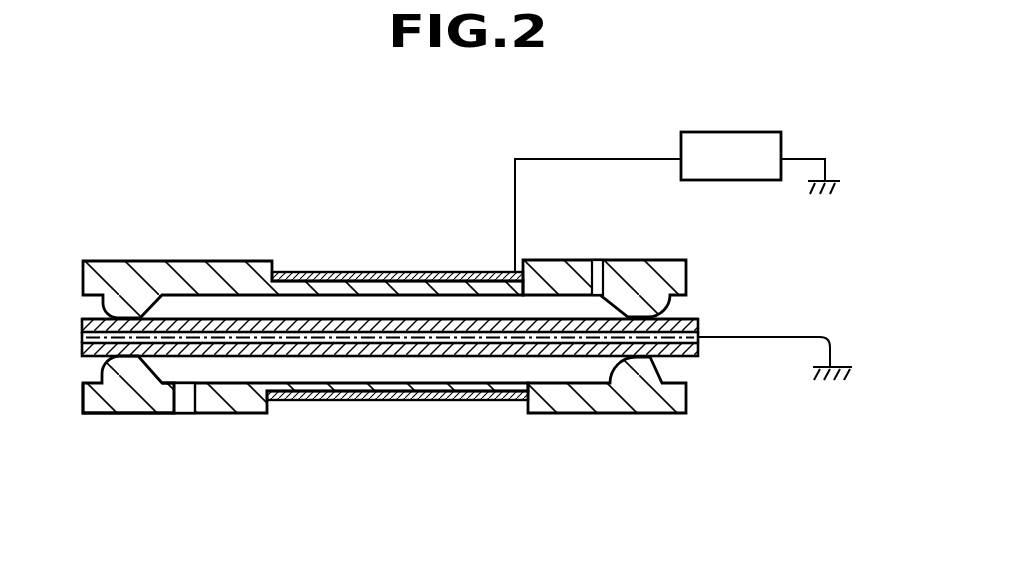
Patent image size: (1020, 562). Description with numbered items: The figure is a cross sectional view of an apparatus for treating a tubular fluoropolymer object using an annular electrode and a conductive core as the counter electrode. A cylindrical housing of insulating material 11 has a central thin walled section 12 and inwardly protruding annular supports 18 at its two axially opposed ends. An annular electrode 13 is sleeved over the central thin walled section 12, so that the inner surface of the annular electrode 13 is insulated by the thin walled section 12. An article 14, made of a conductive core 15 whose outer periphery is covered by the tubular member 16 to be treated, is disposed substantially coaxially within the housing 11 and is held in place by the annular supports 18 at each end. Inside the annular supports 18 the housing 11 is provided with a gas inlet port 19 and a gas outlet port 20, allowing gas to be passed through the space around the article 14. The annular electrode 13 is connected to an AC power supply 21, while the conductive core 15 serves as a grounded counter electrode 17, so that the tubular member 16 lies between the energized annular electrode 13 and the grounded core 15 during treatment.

The cylindrical housing of insulating material 11 is at (213, 270).
The central thin walled section 12 is at (322, 378).
The annular electrode 13 is at (372, 272).
The article 14 is at (431, 364).
The conductive core 15 is at (513, 340).
The tubular member 16 is at (487, 356).
The counter electrode 17 is at (431, 318).
The annular supports 18 is at (116, 404).
The gas inlet port 19 is at (181, 404).
The gas outlet port 20 is at (594, 268).
The AC power supply 21 is at (729, 142).